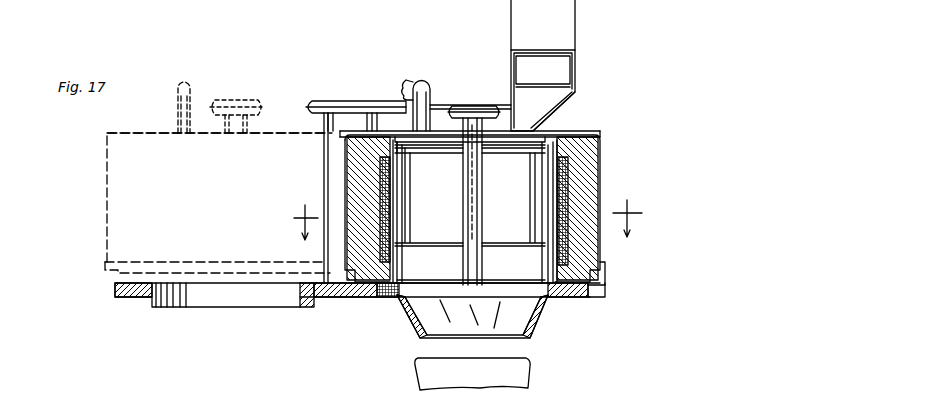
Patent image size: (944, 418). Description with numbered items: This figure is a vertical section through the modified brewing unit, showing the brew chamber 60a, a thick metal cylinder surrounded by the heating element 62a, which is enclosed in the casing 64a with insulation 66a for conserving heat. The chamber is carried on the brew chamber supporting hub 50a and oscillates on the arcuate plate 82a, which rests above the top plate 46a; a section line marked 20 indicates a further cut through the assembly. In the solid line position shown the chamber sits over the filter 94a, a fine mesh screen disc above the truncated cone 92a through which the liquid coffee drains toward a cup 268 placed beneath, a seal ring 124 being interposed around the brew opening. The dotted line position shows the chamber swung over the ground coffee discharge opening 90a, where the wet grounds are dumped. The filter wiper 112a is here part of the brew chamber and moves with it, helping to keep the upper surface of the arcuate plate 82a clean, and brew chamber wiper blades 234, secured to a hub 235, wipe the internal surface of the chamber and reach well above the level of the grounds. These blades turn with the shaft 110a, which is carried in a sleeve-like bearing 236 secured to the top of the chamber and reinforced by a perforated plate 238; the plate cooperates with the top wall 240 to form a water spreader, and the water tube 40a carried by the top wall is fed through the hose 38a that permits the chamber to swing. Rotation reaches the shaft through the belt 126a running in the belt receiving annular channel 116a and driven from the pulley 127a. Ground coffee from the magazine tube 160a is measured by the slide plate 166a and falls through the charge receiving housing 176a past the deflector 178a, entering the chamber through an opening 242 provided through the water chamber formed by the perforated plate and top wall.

The section line 20 is at (465, 220).
The hose 38a is at (405, 82).
The water tube 40a is at (190, 98).
The top plate 46a is at (546, 299).
The brew chamber supporting hub 50a is at (325, 188).
The brew chamber 60a is at (586, 171).
The heating element 62a is at (566, 178).
The casing 64a is at (107, 176).
The insulation 66a is at (596, 252).
The arcuate plate 82a is at (322, 309).
The ground coffee discharge opening 90a is at (180, 302).
The truncated cone 92a is at (526, 334).
The filter 94a is at (426, 292).
The shaft 110a is at (480, 182).
The filter wiper 112a is at (447, 281).
The belt receiving annular channel 116a is at (240, 101).
The seal ring 124 is at (388, 297).
The belt 126a is at (462, 108).
The pulley 127a is at (350, 101).
The magazine tube 160a is at (576, 20).
The slide plate 166a is at (558, 82).
The charge receiving housing 176a is at (508, 68).
The deflector 178a is at (556, 106).
The brew chamber wiper blades 234 is at (437, 243).
The hub 235 is at (474, 250).
The sleeve-like bearing 236 is at (481, 210).
The perforated plate 238 is at (437, 153).
The top wall 240 is at (470, 130).
The opening 242 is at (519, 146).
The cup 268 is at (516, 378).